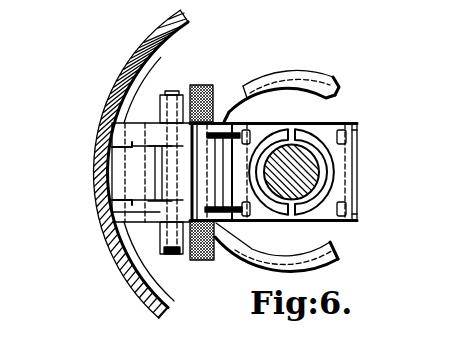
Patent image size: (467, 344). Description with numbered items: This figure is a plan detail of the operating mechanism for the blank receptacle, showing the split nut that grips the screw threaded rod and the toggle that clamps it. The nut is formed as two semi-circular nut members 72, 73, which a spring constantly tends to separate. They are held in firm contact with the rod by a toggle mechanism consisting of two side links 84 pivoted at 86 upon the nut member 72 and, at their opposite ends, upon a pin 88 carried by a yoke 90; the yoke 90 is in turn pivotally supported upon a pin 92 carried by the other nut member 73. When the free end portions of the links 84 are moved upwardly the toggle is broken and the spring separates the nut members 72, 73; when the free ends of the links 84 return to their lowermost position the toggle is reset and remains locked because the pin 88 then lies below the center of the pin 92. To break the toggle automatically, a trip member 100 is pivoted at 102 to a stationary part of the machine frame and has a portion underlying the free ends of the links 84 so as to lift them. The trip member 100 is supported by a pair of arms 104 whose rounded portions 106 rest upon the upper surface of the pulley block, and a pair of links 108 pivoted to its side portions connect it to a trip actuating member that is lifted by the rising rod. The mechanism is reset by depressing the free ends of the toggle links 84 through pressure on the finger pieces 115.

The semi-circular nut member 72 is at (318, 147).
The semi-circular nut member 73 is at (296, 126).
The side links 84 is at (278, 123).
The pivot 86 is at (358, 211).
The pin 88 is at (172, 223).
The yoke 90 is at (224, 100).
The pin 92 is at (250, 121).
The trip member 100 is at (153, 214).
The pivot 102 is at (135, 172).
The arms 104 is at (338, 260).
The rounded portions 106 is at (255, 268).
The links 108 is at (170, 96).
The finger pieces 115 is at (207, 86).